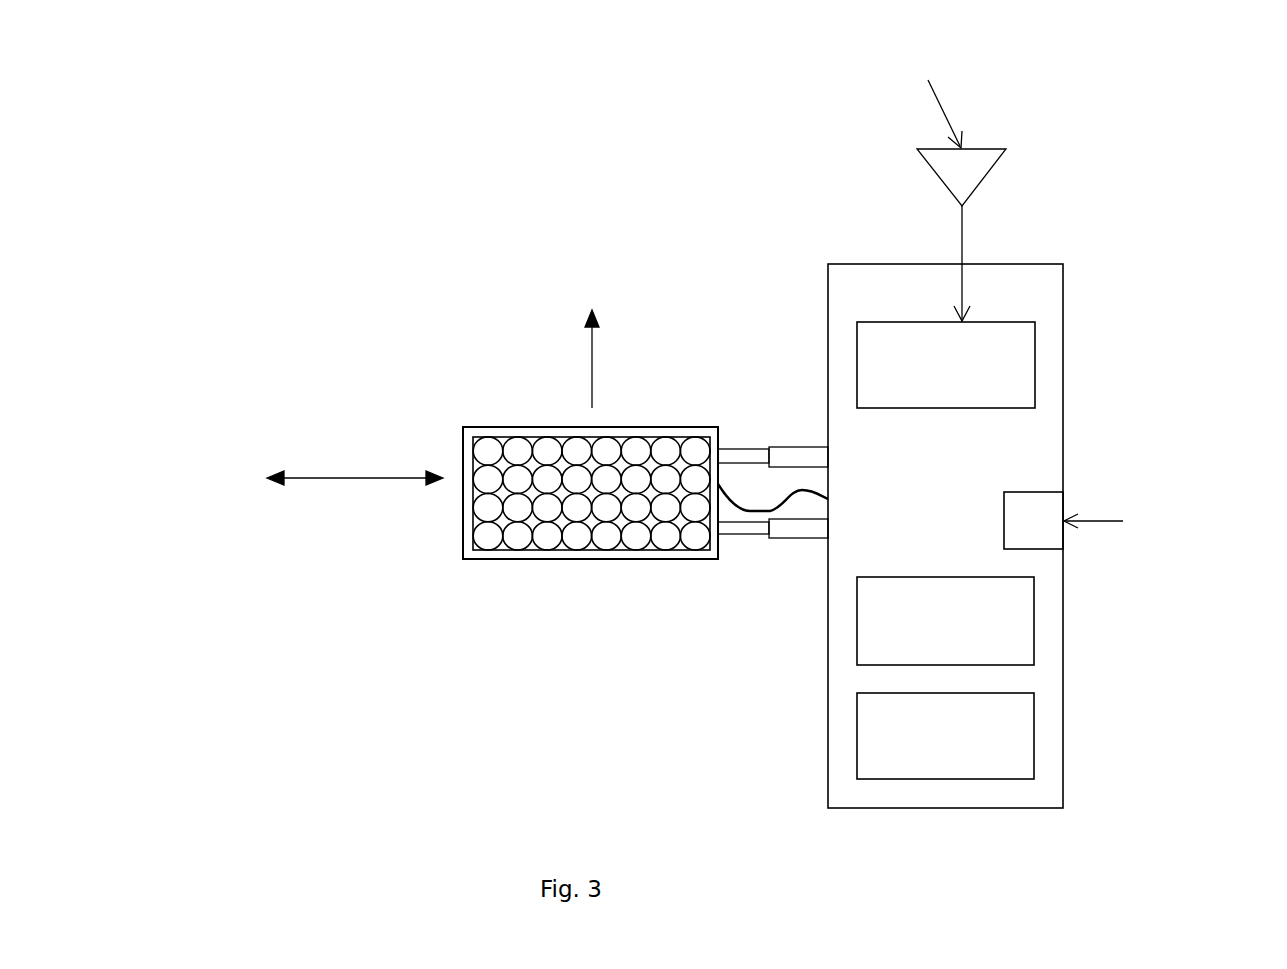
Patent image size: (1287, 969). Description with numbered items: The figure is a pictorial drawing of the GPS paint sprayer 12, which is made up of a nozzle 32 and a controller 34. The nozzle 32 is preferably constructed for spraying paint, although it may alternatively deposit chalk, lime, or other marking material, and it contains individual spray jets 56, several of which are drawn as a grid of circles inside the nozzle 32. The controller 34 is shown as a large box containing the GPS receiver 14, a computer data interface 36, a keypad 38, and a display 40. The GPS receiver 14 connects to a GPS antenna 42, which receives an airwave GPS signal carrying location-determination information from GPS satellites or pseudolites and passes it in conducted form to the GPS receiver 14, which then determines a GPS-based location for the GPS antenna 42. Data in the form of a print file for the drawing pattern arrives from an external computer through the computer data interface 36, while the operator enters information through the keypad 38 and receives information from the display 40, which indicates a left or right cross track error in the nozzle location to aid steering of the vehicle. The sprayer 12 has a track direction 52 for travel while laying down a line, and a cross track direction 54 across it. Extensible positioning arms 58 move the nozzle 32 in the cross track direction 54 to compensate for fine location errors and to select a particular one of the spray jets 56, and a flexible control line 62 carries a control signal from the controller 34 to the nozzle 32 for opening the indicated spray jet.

The GPS paint sprayer 12 is at (457, 758).
The GPS receiver 14 is at (946, 307).
The nozzle 32 is at (502, 560).
The controller 34 is at (945, 536).
The computer data interface 36 is at (1130, 507).
The keypad 38 is at (945, 621).
The display 40 is at (945, 736).
The GPS antenna 42 is at (985, 177).
The track direction 52 is at (596, 308).
The cross track direction 54 is at (299, 492).
The spray jets 56 is at (579, 481).
The positioning arms 58 is at (785, 447).
The control line 62 is at (750, 511).